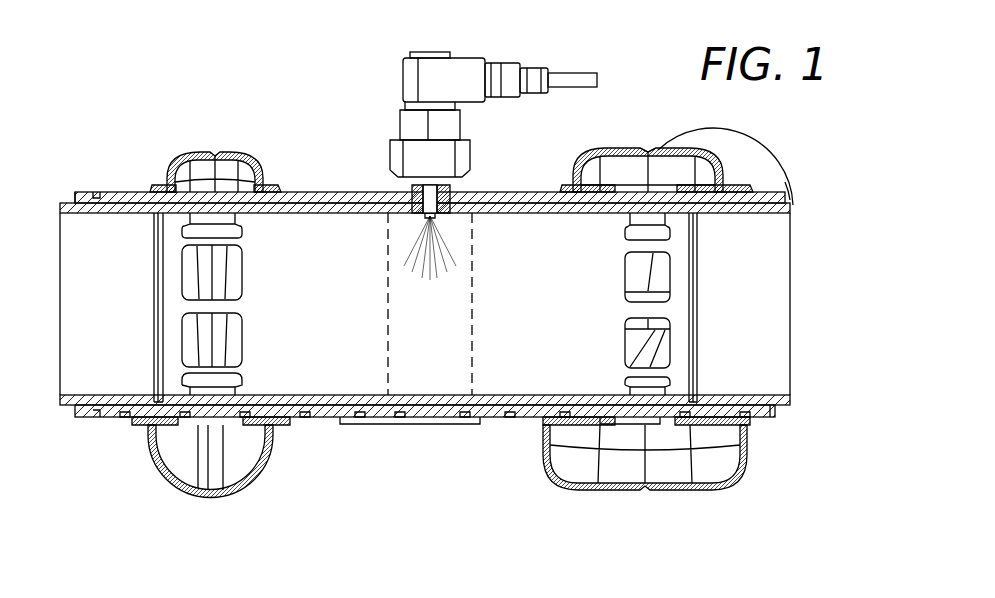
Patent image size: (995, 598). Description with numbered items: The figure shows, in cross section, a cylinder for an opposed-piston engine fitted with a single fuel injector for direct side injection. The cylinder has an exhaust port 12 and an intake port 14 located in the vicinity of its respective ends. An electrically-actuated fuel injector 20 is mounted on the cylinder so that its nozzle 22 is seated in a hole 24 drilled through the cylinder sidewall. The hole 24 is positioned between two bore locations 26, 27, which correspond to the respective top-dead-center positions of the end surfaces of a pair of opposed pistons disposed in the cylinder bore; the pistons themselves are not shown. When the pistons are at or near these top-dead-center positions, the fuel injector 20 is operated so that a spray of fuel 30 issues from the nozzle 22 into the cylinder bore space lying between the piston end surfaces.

The exhaust port 12 is at (232, 130).
The intake port 14 is at (735, 498).
The fuel injector 20 is at (462, 58).
The nozzle 22 is at (428, 192).
The hole 24 is at (427, 214).
The bore location 26 is at (390, 367).
The bore location 27 is at (470, 365).
The spray of fuel 30 is at (438, 239).